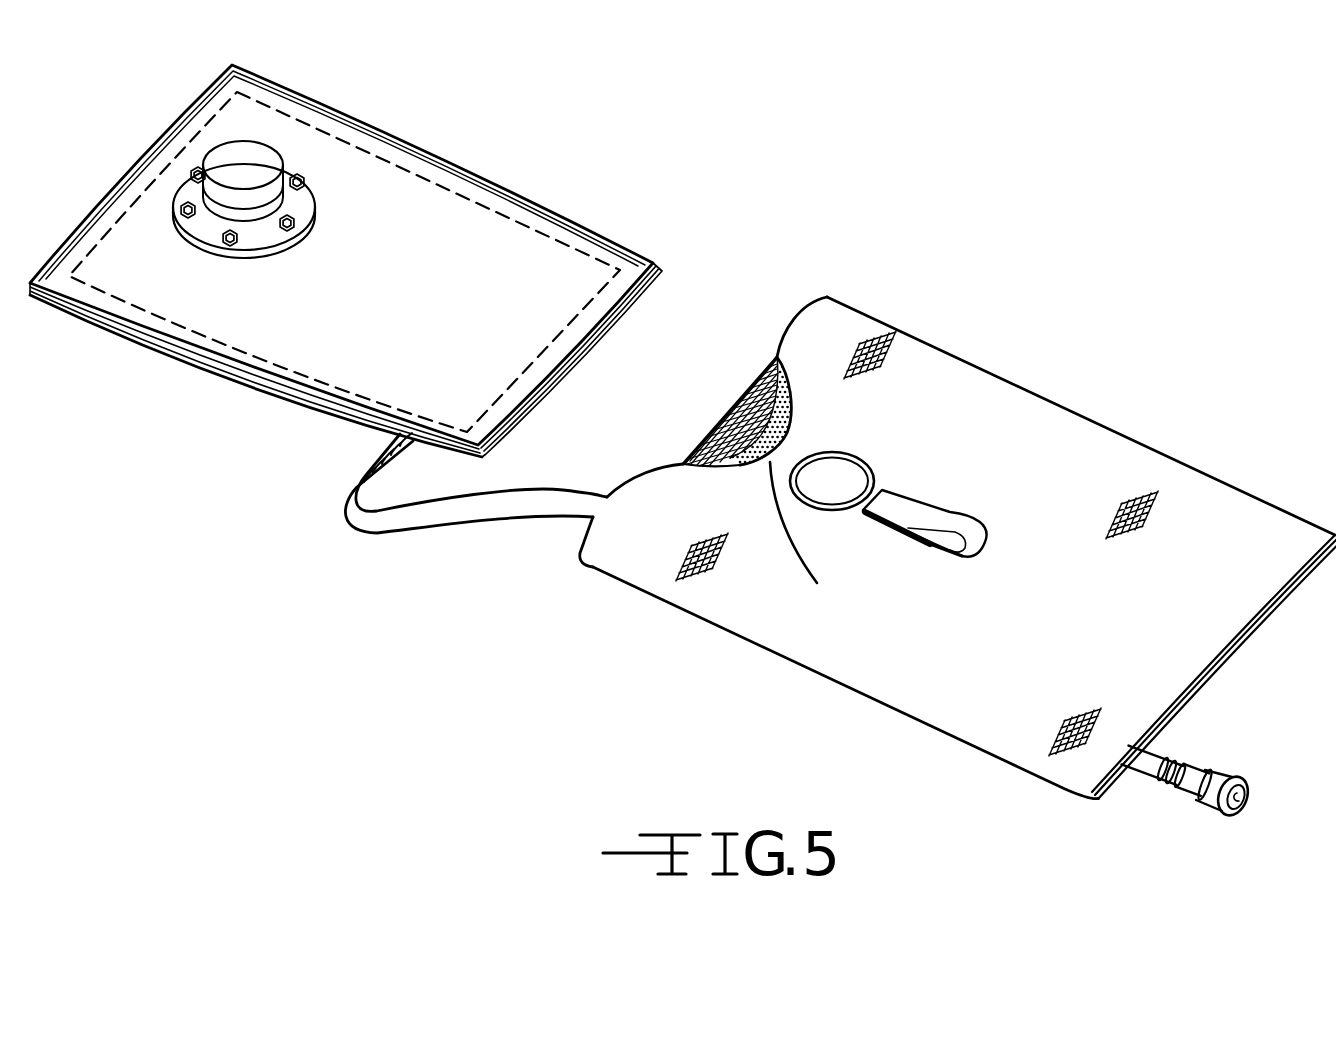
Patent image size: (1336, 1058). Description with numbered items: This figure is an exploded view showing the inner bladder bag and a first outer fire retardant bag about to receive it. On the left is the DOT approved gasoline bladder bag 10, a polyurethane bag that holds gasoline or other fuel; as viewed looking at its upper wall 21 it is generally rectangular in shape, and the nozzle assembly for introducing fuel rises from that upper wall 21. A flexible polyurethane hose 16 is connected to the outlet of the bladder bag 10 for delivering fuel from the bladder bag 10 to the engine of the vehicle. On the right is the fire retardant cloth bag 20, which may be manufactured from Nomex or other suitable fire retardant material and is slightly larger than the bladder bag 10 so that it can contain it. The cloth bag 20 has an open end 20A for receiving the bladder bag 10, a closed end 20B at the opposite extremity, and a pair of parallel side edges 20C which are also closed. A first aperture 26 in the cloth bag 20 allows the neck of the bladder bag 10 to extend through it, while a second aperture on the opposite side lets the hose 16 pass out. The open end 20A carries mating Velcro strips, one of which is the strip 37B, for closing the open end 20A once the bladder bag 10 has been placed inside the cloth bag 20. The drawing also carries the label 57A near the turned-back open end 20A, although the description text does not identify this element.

The gasoline bladder bag 10 is at (287, 402).
The upper wall 21 is at (405, 272).
The hose 16 is at (526, 510).
The fire retardant cloth bag 20 is at (1003, 380).
The open end 20A is at (740, 398).
The closed end 20B is at (1262, 618).
The side edges 20C is at (1160, 450).
The first aperture 26 is at (843, 470).
The Velcro strip 37B is at (810, 542).
The fastener patch 57A is at (718, 426).